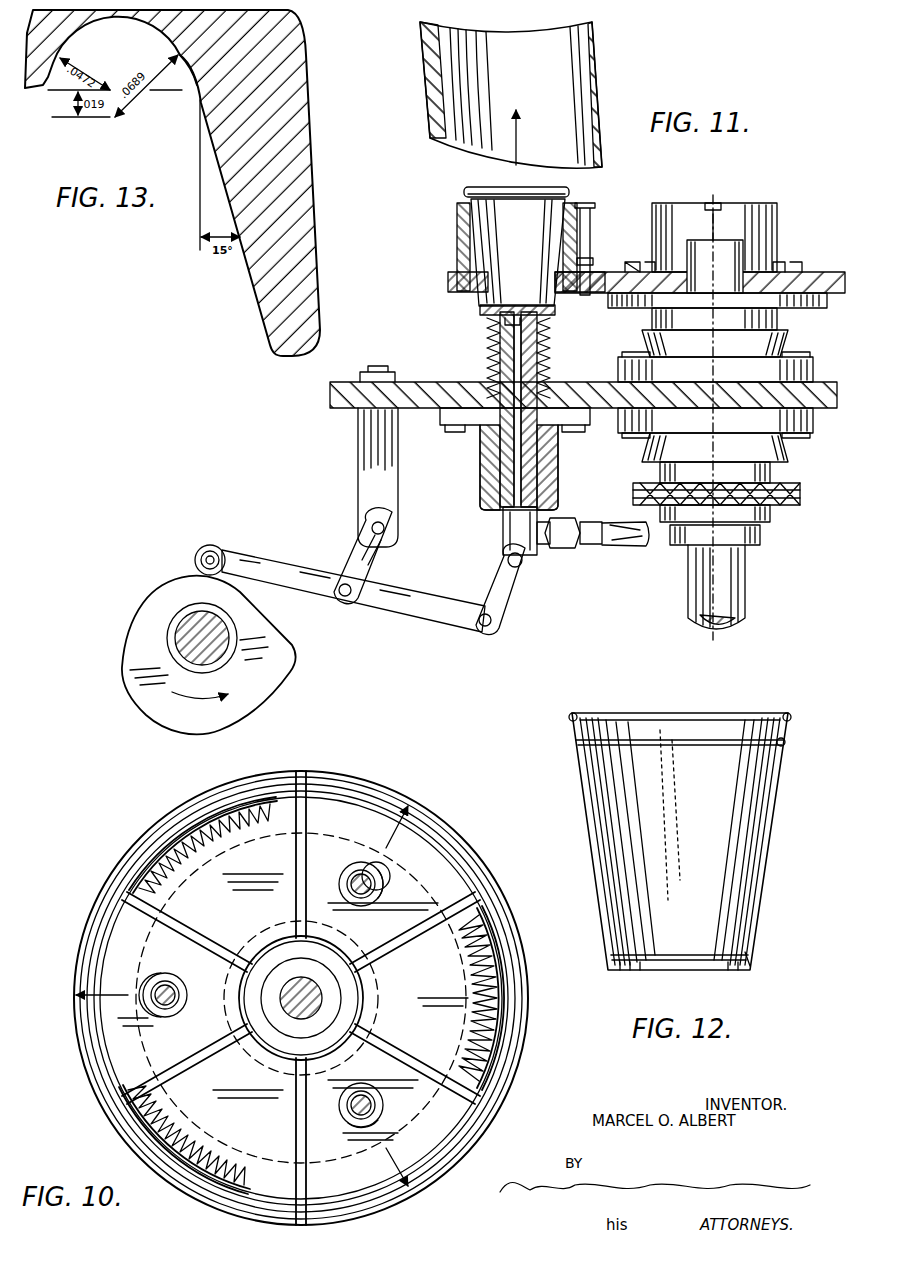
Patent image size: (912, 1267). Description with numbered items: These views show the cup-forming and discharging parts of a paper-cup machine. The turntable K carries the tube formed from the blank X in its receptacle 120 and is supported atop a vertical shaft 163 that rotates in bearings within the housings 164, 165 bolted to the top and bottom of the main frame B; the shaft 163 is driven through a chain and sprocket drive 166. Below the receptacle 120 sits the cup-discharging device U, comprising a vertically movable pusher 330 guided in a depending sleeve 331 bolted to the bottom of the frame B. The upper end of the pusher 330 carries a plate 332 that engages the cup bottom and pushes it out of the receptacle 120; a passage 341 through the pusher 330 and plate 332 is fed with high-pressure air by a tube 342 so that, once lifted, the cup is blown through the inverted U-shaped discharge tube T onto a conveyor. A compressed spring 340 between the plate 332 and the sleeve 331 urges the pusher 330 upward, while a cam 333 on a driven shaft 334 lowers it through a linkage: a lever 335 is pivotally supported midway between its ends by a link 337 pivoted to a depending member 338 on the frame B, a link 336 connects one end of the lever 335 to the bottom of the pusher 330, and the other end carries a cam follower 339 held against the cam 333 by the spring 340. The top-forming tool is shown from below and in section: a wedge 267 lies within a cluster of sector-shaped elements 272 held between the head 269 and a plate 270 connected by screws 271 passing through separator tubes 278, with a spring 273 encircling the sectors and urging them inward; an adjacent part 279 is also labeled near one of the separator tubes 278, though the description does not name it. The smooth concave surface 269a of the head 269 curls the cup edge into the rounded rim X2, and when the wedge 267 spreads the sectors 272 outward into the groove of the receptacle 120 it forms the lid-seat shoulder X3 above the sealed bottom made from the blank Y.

In FIG. 13, the head 269 is at (259, 302).
In FIG. 13, the concave-forming surface 269a is at (195, 98).
In FIG. 11, the discharge tube T is at (604, 78).
In FIG. 11, the blank X is at (486, 241).
In FIG. 12, the blank X is at (792, 868).
In FIG. 11, the receptacle 120 is at (458, 220).
In FIG. 11, the turntable K is at (832, 270).
In FIG. 11, the upper bearing housing 164 is at (790, 337).
In FIG. 11, the lower bearing housing 165 is at (790, 457).
In FIG. 11, the chain and sprocket drive 166 is at (796, 505).
In FIG. 11, the vertical shaft 163 is at (746, 590).
In FIG. 11, the plate 332 is at (480, 310).
In FIG. 11, the compressed spring 340 is at (548, 338).
In FIG. 11, the cup-discharging device U is at (500, 352).
In FIG. 11, the main frame B is at (434, 382).
In FIG. 11, the pusher 330 is at (503, 442).
In FIG. 11, the sleeve 331 is at (490, 482).
In FIG. 11, the passage 341 is at (522, 464).
In FIG. 11, the tube 342 is at (628, 548).
In FIG. 11, the link 336 is at (504, 578).
In FIG. 11, the lever 335 is at (420, 620).
In FIG. 11, the depending member 338 is at (360, 444).
In FIG. 11, the link 337 is at (356, 550).
In FIG. 11, the cam follower 339 is at (212, 545).
In FIG. 11, the cam 333 is at (282, 672).
In FIG. 11, the driven shaft 334 is at (185, 628).
In FIG. 12, the rounded rim X2 is at (792, 718).
In FIG. 12, the shoulder X3 is at (786, 740).
In FIG. 12, the bottom blank Y is at (674, 940).
In FIG. 10, the wedge 267 is at (283, 950).
In FIG. 10, the plate 270 is at (246, 950).
In FIG. 10, the separator tubes 278 is at (370, 862).
In FIG. 10, the pin 279 is at (376, 860).
In FIG. 10, the screws 271 is at (382, 898).
In FIG. 10, the sector-shaped elements 272 is at (140, 900).
In FIG. 10, the spring 273 is at (470, 905).